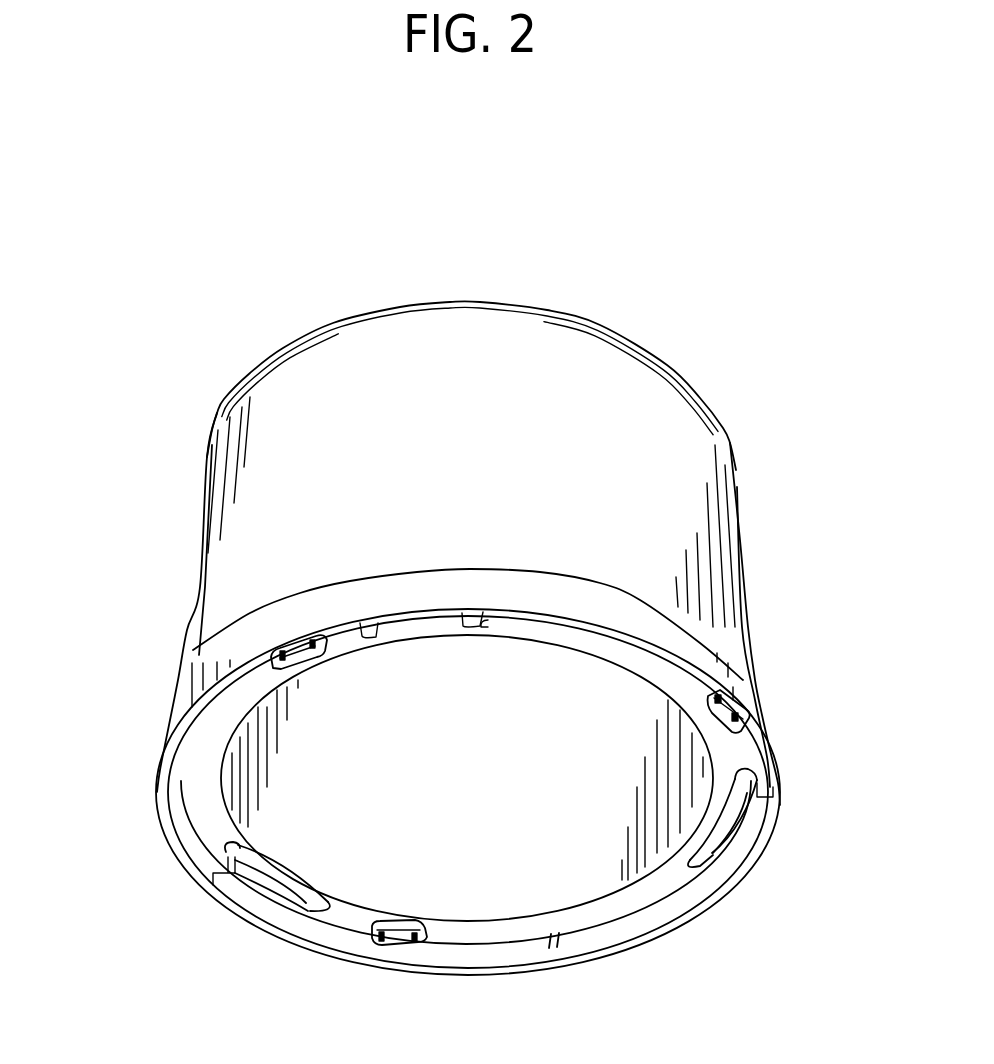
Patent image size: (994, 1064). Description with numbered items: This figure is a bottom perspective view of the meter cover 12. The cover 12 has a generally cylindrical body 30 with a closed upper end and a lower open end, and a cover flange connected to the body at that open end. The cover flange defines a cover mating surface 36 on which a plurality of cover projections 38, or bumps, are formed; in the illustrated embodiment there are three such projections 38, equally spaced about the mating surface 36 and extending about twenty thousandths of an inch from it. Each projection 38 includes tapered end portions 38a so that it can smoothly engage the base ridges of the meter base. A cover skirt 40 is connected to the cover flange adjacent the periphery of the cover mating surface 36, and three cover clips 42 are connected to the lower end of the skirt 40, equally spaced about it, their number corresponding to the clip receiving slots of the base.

The meter cover 12 is at (735, 445).
The cylindrical body 30 is at (625, 395).
The cover mating surface 36 is at (197, 790).
The cover projections 38 is at (277, 658).
The tapered end portions 38a is at (312, 640).
The cover skirt 40 is at (697, 650).
The cover clips 42 is at (423, 623).